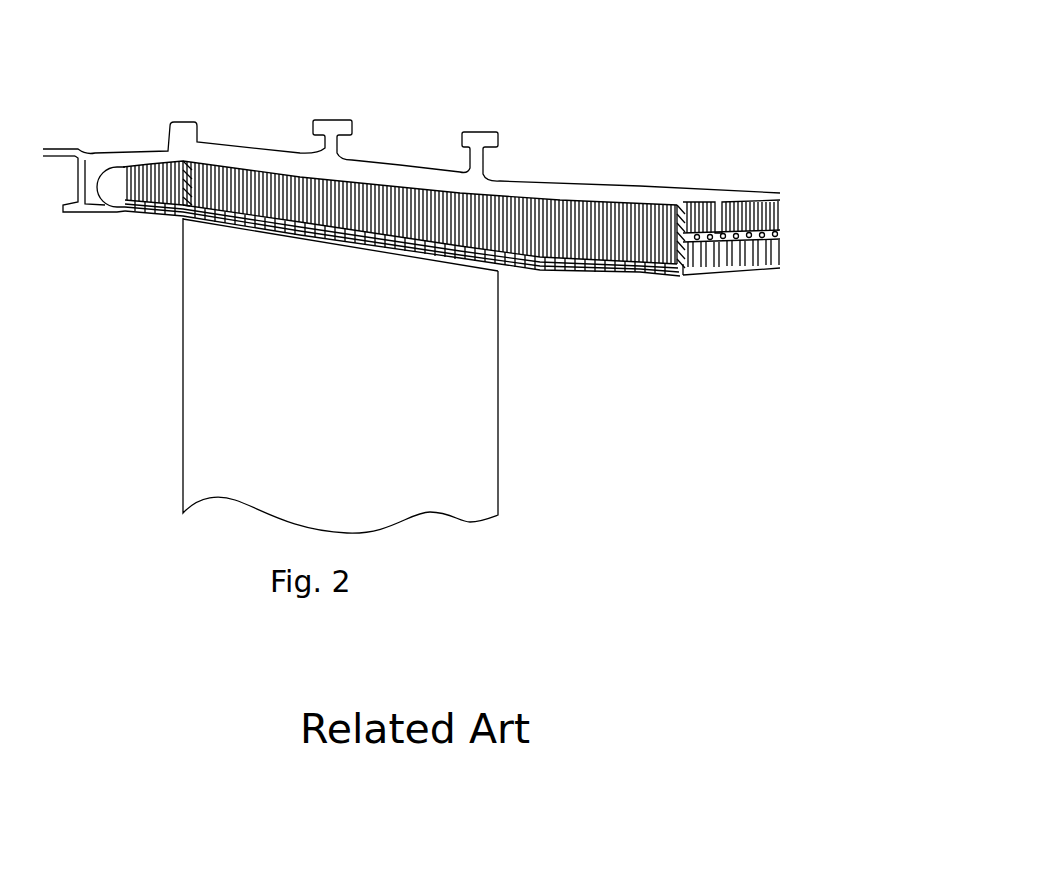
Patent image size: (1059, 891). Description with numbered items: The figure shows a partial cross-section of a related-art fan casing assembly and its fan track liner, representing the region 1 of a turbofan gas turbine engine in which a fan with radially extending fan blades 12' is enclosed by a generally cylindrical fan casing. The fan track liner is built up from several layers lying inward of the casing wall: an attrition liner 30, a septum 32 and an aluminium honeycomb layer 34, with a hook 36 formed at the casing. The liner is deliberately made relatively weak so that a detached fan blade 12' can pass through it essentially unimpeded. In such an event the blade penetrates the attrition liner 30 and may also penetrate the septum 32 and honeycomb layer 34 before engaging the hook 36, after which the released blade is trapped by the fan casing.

The region of fan casing 1 is at (195, 98).
The attrition liner 30 is at (203, 227).
The septum 32 is at (348, 243).
The honeycomb layer 34 is at (443, 265).
The hook 36 is at (118, 212).
The fan blade 12' is at (340, 375).